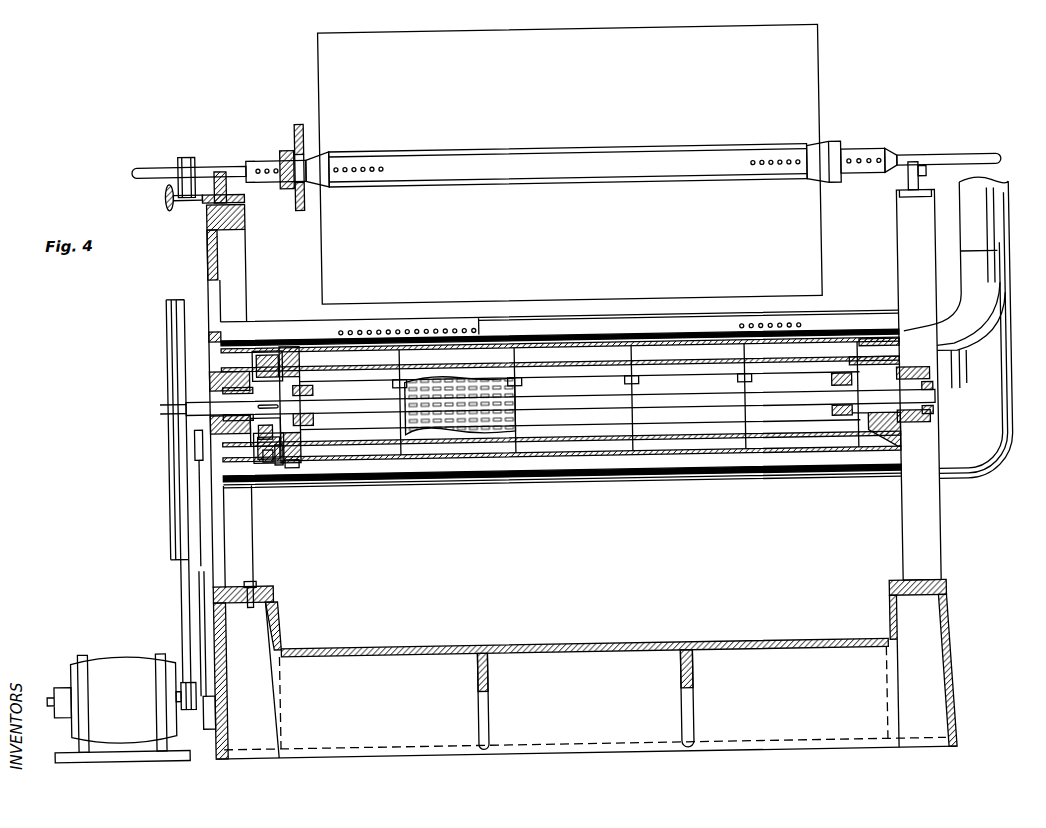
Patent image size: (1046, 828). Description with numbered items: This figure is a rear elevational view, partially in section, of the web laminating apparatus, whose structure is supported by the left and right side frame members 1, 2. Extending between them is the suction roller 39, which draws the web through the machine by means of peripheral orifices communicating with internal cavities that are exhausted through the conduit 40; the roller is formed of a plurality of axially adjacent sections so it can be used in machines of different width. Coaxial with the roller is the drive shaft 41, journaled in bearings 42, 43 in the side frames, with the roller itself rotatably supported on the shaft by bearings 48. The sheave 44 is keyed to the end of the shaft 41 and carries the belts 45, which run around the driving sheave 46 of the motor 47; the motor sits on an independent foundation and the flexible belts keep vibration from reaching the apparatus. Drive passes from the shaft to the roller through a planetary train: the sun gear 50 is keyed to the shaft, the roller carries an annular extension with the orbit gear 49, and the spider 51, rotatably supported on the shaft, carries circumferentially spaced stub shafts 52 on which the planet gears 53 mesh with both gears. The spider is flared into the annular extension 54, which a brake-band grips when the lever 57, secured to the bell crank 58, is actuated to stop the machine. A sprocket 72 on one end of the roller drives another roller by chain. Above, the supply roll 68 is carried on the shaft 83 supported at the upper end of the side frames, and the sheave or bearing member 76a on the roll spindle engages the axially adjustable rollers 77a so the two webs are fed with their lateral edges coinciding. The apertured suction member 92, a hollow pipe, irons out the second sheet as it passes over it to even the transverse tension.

The side frame member 1 is at (933, 537).
The side frame member 2 is at (243, 545).
The suction roller 39 is at (596, 441).
The conduit 40 is at (991, 330).
The drive shaft 41 is at (360, 401).
The bearing 42 is at (930, 406).
The bearing 43 is at (217, 412).
The sheave 44 is at (168, 345).
The belts 45 is at (175, 553).
The driving sheave 46 is at (173, 683).
The motor 47 is at (83, 657).
The bearings 48 is at (306, 410).
The orbit gear 49 is at (281, 450).
The sun gear 50 is at (259, 431).
The spider 51 is at (208, 388).
The stub shafts 52 is at (257, 363).
The planet gears 53 is at (280, 361).
The annular extension 54 is at (272, 445).
The lever 57 is at (192, 566).
The bell crank 58 is at (191, 711).
The roll 68 is at (810, 99).
The sprocket 72 is at (292, 450).
The sheave or bearing member 76a is at (199, 157).
The rollers 77a is at (186, 200).
The shaft 83 is at (909, 164).
The suction member 92 is at (834, 327).